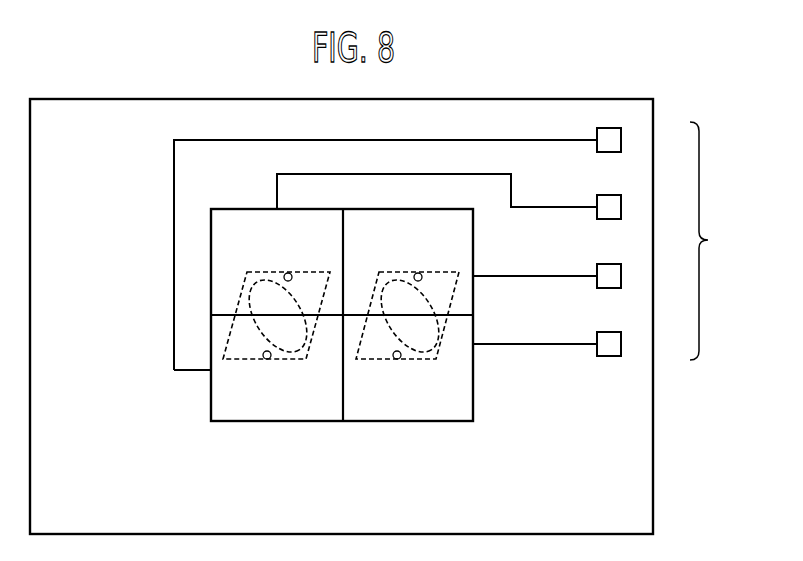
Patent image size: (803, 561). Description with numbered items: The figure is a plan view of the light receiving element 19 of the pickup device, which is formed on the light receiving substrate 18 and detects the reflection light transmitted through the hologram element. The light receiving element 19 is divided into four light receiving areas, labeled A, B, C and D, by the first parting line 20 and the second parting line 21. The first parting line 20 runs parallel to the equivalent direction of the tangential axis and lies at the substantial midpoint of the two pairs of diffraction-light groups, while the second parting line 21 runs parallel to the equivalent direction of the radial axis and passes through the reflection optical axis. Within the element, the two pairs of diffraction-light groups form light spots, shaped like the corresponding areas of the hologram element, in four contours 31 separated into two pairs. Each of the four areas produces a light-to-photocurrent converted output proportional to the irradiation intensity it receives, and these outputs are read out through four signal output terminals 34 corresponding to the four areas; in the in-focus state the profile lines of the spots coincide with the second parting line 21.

The light receiving substrate 18 is at (632, 453).
The light receiving element 19 is at (262, 423).
The first parting line 20 is at (344, 403).
The second parting line 21 is at (473, 300).
The contours 31 is at (263, 272).
The output terminals 34 is at (673, 241).